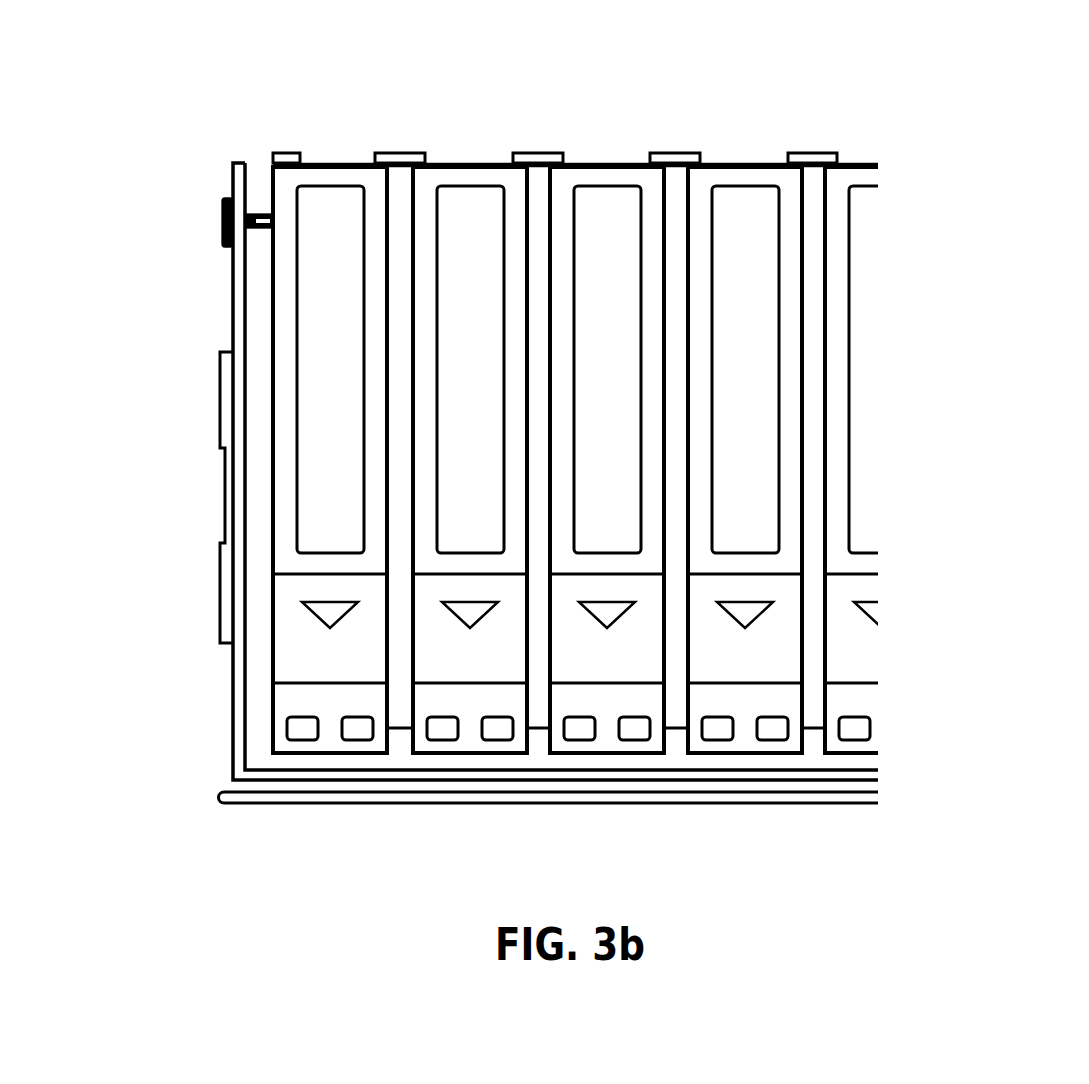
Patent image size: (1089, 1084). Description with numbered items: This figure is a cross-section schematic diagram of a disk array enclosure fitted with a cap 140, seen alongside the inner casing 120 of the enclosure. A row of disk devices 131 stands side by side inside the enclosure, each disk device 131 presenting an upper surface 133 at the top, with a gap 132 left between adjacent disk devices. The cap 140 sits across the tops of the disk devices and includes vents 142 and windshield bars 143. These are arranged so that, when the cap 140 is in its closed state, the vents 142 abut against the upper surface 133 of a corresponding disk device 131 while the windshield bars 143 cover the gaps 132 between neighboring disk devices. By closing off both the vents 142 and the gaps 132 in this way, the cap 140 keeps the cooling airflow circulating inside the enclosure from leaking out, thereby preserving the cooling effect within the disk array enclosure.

The inner casing 120 is at (200, 437).
The disk device 131 is at (882, 403).
The gap 132 is at (818, 333).
The upper surface 133 is at (862, 163).
The cap 140 is at (674, 136).
The vent 142 is at (335, 155).
The windshield bar 143 is at (537, 158).